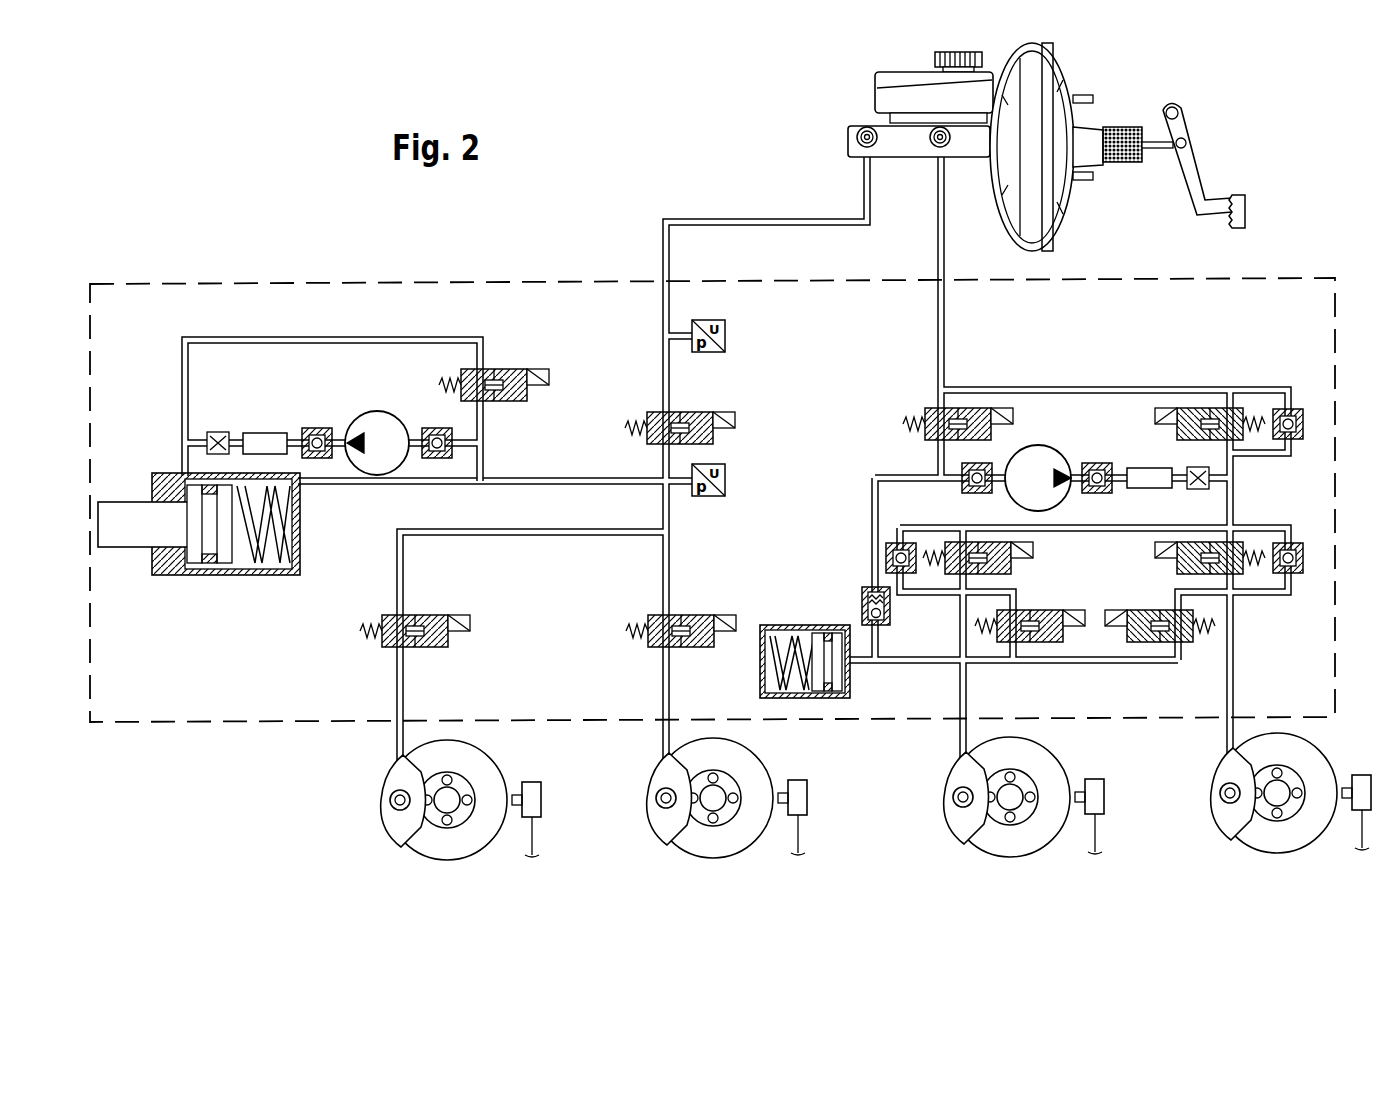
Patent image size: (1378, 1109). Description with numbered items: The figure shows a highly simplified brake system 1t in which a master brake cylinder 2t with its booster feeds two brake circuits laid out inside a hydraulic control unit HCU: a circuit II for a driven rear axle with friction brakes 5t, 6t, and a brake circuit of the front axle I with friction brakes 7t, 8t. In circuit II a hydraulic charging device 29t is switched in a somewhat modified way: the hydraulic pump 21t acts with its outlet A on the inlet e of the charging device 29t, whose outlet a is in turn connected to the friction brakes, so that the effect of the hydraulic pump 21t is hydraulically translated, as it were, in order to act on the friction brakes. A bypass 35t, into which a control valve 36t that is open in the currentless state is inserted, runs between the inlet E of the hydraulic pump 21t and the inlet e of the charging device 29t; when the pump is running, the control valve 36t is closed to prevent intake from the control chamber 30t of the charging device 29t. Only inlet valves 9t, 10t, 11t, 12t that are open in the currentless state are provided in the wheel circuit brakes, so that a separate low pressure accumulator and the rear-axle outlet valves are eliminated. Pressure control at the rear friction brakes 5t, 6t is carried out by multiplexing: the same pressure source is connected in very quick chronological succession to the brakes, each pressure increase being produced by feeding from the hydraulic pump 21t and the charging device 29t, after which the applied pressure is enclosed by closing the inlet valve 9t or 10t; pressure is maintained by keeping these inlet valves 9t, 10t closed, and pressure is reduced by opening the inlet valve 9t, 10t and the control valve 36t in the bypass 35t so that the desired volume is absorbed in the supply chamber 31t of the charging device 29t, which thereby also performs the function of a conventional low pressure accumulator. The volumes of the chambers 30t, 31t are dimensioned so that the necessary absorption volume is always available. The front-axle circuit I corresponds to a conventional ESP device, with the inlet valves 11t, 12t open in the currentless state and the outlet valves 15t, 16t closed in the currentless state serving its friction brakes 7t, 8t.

The hydraulic vehicle brake system 1t is at (197, 225).
The master brake cylinder with brake booster 2t is at (863, 88).
The friction brake 5t is at (405, 823).
The friction brake 6t is at (672, 820).
The friction brake 7t is at (968, 820).
The friction brake 8t is at (1233, 816).
The inlet valve 9t is at (422, 613).
The inlet valve 10t is at (690, 613).
The inlet valve 11t is at (1015, 572).
The inlet valve 12t is at (1177, 573).
The outlet valve 15t is at (1032, 643).
The outlet valve 16t is at (1188, 650).
The hydraulic pump 21t is at (372, 425).
The hydraulic charging device 29t is at (199, 553).
The control chamber 30t is at (177, 476).
The supply chamber 31t is at (273, 572).
The bypass 35t is at (333, 338).
The control valve 36t is at (528, 385).
The outlet of the hydraulic pump A is at (348, 432).
The inlet of the hydraulic pump E is at (410, 436).
The outlet of the charging device a is at (300, 483).
The inlet of the charging device e is at (182, 474).
The brake circuit of the front axle I is at (925, 738).
The circuit II is at (365, 745).
The hydraulic control unit HCU is at (1285, 276).